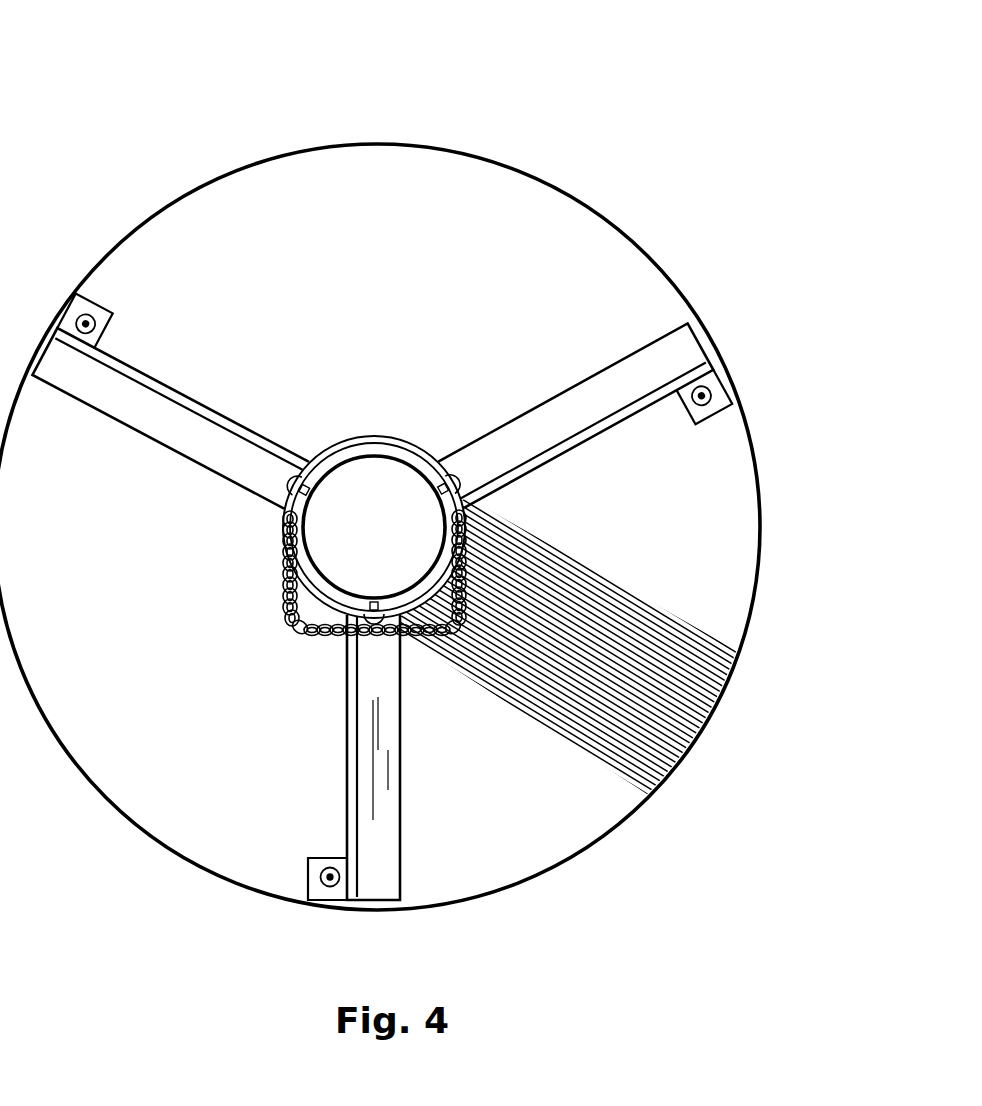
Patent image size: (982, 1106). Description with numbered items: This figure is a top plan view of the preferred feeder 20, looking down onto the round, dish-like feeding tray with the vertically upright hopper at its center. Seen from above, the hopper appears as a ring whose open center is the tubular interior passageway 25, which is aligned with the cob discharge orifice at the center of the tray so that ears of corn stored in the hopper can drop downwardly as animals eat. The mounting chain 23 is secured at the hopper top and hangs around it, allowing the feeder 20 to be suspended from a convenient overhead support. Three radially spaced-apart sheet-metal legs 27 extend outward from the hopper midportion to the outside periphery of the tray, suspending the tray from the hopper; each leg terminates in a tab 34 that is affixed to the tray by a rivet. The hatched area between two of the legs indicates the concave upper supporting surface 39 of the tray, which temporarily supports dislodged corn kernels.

The feeder 20 is at (513, 103).
The mounting chain 23 is at (281, 574).
The tubular interior passageway 25 is at (380, 487).
The sheet-metal legs 27 is at (530, 428).
The tabs 34 is at (310, 887).
The upper supporting surface 39 is at (580, 721).